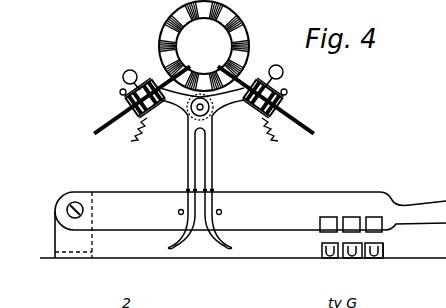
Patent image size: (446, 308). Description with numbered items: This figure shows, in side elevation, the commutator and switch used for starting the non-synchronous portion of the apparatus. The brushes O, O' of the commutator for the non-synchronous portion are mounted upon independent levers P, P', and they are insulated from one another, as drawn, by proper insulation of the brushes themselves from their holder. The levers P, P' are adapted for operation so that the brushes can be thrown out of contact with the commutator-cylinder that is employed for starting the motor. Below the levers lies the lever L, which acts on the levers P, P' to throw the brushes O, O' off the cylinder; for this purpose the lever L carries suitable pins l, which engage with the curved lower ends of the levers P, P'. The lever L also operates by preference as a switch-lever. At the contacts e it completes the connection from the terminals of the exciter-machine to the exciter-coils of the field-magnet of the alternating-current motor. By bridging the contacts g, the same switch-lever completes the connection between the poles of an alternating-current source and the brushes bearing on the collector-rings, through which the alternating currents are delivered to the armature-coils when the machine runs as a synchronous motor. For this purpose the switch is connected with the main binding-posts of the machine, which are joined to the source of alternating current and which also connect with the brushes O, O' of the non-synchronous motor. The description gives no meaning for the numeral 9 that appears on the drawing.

The magnet ring armature 9 is at (217, 26).
The brush of the commutator O is at (142, 94).
The brush of the commutator O' is at (265, 93).
The brush lever P is at (197, 168).
The brush lever P' is at (219, 170).
The lever L is at (250, 225).
The pins l is at (178, 212).
The contacts g is at (352, 217).
The contacts e is at (391, 249).